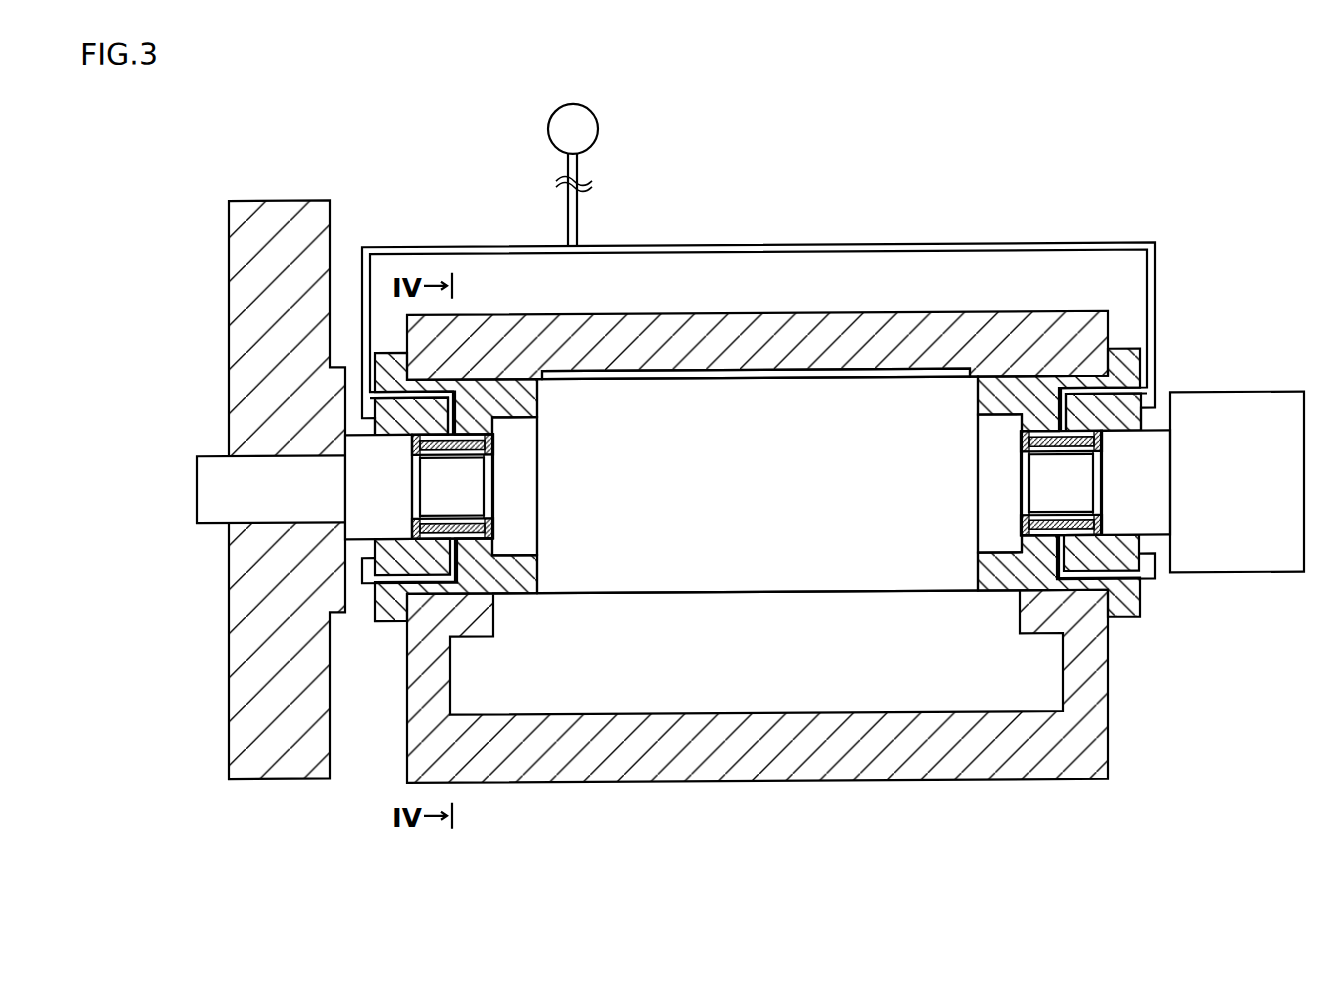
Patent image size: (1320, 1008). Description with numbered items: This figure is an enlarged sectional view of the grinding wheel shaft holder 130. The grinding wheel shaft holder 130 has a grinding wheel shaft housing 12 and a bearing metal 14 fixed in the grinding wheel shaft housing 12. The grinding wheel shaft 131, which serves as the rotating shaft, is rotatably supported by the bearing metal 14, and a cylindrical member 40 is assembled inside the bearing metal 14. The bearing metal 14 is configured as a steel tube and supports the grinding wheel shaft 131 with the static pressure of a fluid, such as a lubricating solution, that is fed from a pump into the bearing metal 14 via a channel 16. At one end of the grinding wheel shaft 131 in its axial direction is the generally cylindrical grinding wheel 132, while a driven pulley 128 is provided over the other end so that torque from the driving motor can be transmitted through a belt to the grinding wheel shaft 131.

The grinding wheel shaft housing 12 is at (738, 330).
The bearing metal 14 is at (483, 386).
The channel 16 is at (830, 248).
The cylindrical member 40 is at (478, 594).
The driven pulley 128 is at (1237, 560).
The grinding wheel shaft holder 130 is at (926, 181).
The grinding wheel shaft 131 is at (933, 578).
The grinding wheel 132 is at (255, 226).